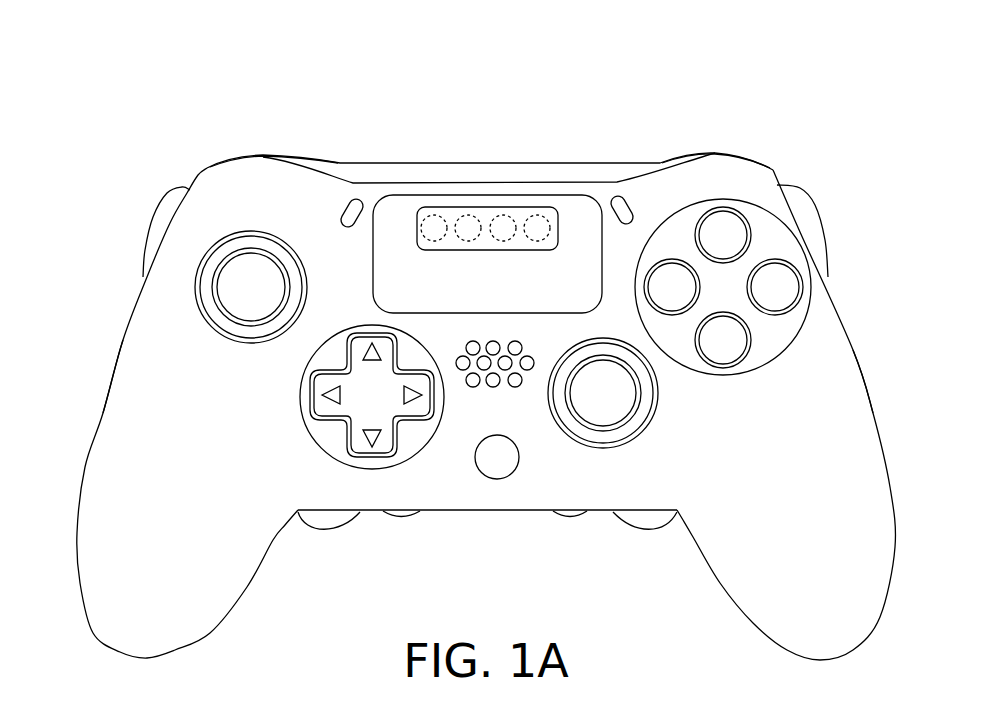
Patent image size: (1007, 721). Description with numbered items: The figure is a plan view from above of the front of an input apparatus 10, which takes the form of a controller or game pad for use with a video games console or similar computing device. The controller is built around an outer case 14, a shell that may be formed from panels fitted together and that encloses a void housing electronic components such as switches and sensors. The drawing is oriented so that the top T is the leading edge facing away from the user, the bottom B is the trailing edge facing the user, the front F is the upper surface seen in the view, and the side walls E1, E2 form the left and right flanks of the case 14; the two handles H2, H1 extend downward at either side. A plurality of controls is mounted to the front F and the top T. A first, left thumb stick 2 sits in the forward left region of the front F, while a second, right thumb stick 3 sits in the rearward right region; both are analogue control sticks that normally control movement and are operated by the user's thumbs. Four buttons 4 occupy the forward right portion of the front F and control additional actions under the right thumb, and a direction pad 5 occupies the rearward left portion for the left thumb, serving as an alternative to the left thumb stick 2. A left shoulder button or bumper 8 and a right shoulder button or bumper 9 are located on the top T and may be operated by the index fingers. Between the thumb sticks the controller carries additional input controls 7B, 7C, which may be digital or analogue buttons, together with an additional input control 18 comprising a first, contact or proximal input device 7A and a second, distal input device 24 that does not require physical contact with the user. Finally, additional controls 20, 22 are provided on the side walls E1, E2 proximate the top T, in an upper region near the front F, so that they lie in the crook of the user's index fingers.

The input apparatus 10 is at (331, 62).
The left shoulder button 8 is at (262, 153).
The right shoulder button 9 is at (714, 160).
The additional input control 7C is at (353, 193).
The top T is at (422, 163).
The distal input device 24 is at (460, 208).
The additional input control 18 is at (545, 188).
The additional control 20 is at (167, 208).
The additional control 22 is at (806, 206).
The left thumb stick 2 is at (243, 299).
The right thumb stick 3 is at (595, 405).
The buttons 4 is at (767, 299).
The direction pad 5 is at (364, 407).
The contact input device 7A is at (470, 296).
The additional input control 7B is at (510, 453).
The outer case 14 is at (254, 488).
The left handle H2 is at (150, 556).
The right handle H1 is at (792, 556).
The front F is at (558, 490).
The bottom B is at (462, 513).
The side wall E2 is at (113, 365).
The side wall E1 is at (862, 355).